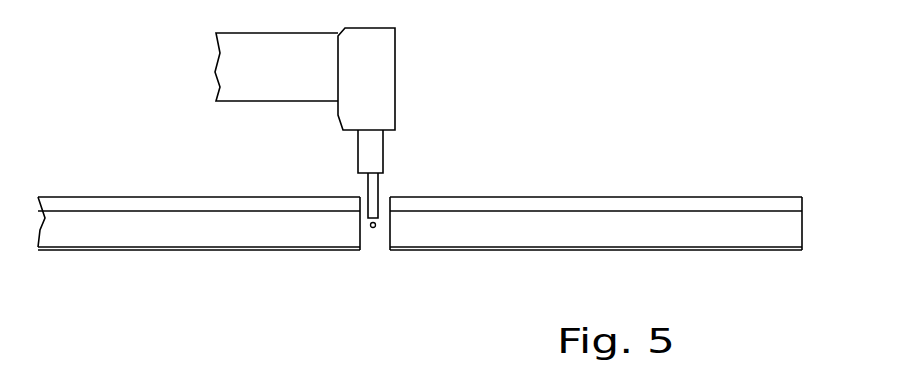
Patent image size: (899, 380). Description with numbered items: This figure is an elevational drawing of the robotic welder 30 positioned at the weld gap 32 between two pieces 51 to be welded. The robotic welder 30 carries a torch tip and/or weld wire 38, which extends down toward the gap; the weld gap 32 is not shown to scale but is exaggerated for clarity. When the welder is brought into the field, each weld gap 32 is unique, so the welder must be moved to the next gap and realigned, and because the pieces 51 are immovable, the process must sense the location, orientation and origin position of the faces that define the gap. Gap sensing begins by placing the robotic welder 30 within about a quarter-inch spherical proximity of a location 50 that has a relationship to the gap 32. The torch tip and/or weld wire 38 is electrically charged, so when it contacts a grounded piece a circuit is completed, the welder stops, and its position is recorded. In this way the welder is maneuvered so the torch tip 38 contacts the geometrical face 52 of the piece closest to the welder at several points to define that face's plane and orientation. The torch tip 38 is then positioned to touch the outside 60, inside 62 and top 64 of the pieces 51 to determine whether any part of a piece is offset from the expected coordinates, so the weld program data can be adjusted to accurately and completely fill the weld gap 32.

The robotic welder 30 is at (383, 60).
The torch tip and/or weld wire 38 is at (383, 190).
The inside of the pieces to be welded 62 is at (384, 193).
The weld gap 32 is at (378, 233).
The pieces to be welded 51 is at (240, 222).
The top of the pieces to be welded 64 is at (268, 197).
The geometrical face of the piece to be welded 52 is at (360, 197).
The outside of the pieces to be welded 60 is at (398, 227).
The location 50 is at (372, 236).